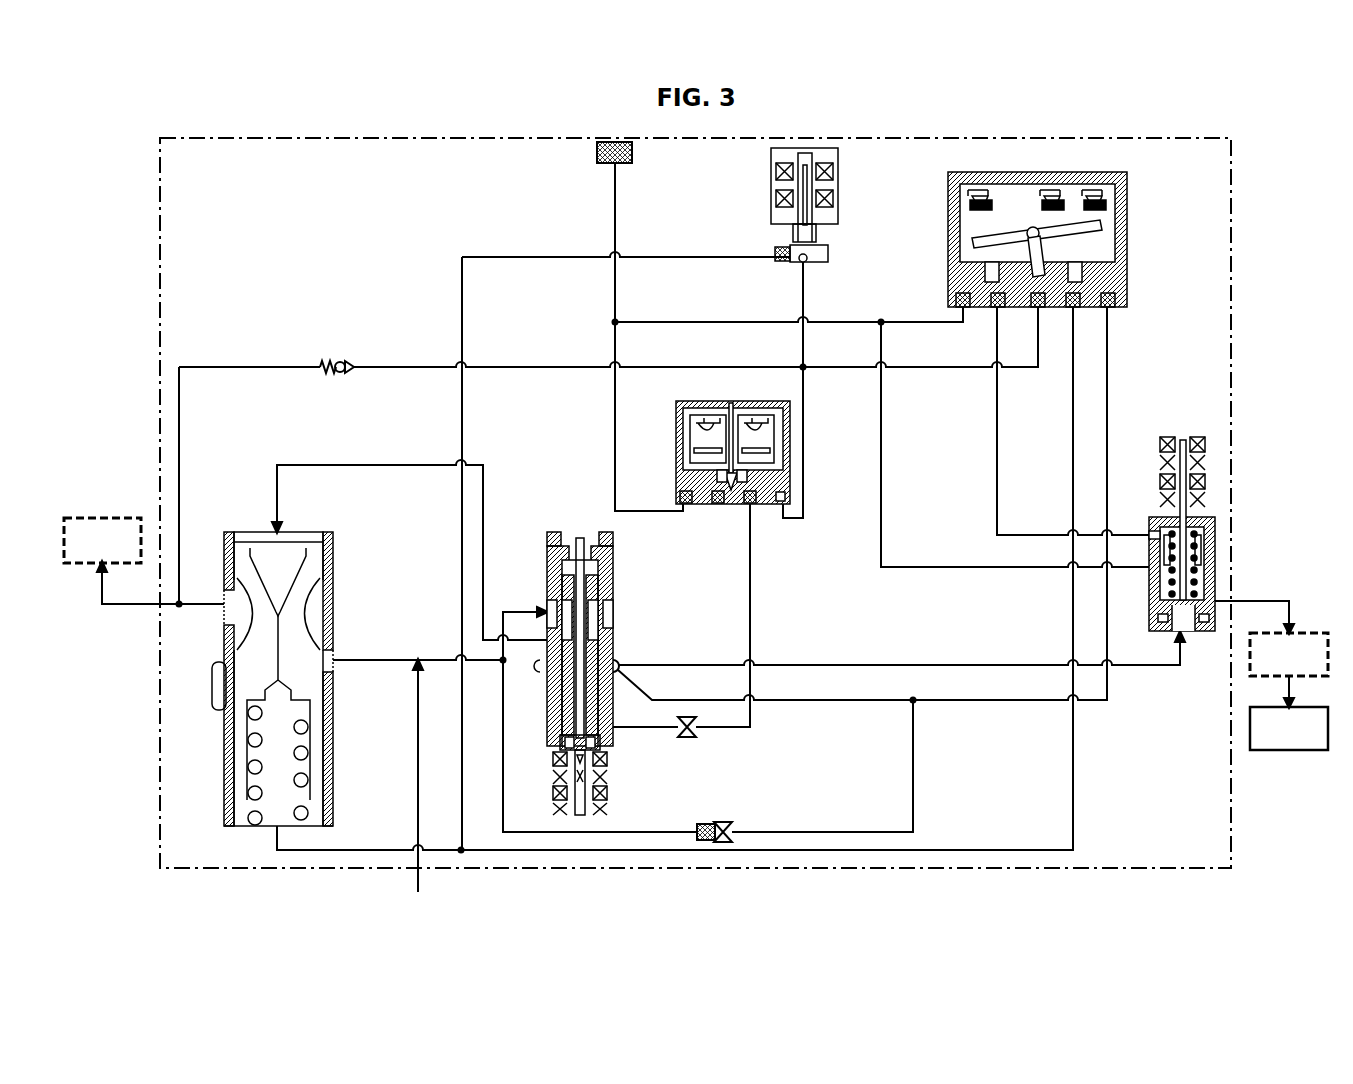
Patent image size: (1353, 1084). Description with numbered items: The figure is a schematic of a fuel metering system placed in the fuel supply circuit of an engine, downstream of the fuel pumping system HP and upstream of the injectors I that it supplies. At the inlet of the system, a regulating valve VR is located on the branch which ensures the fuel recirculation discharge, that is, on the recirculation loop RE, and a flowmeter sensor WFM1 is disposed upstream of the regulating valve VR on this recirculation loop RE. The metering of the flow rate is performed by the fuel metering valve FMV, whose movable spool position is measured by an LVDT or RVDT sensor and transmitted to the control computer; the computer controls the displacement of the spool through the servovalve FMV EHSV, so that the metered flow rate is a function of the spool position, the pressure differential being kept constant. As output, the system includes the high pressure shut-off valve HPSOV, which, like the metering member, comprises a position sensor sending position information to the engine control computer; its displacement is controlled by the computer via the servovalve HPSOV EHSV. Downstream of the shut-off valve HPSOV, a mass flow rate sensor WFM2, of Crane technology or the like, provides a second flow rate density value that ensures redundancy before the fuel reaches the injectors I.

The regulating valve VR is at (348, 707).
The fuel metering valve FMV is at (630, 634).
The servovalve FMV EHSV is at (770, 523).
The HPSOV servovalve HPSOV EHSV is at (1147, 243).
The high pressure shut-off valve HPSOV is at (1228, 562).
The flowmeter sensor WFM1 is at (102, 540).
The mass flow rate sensor WFM2 is at (1289, 654).
The injectors I is at (1289, 728).
The recirculation loop RE is at (132, 628).
The HP pump HP is at (417, 811).